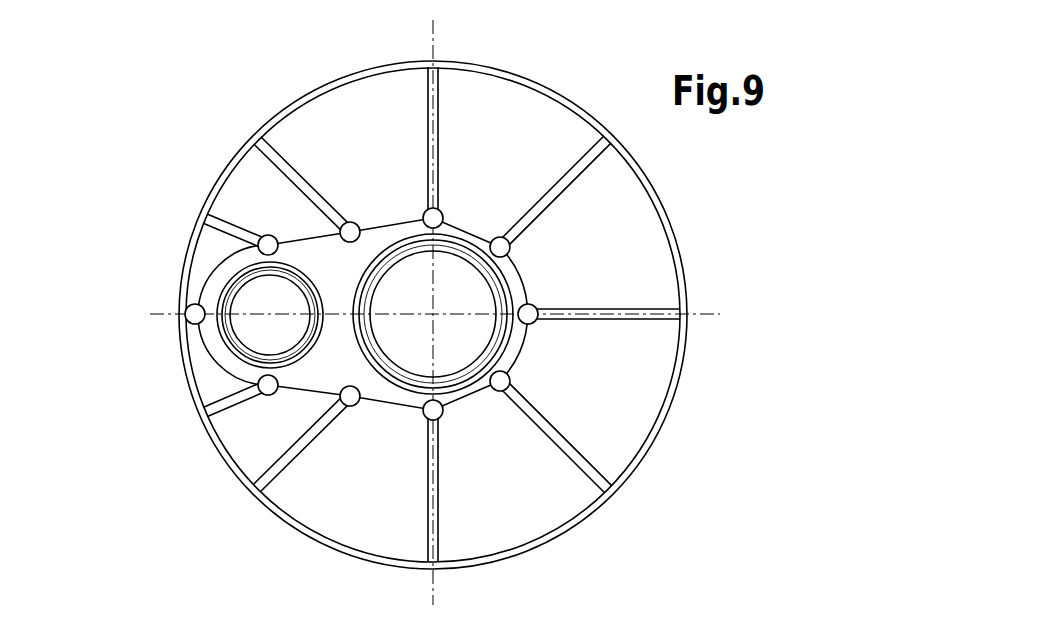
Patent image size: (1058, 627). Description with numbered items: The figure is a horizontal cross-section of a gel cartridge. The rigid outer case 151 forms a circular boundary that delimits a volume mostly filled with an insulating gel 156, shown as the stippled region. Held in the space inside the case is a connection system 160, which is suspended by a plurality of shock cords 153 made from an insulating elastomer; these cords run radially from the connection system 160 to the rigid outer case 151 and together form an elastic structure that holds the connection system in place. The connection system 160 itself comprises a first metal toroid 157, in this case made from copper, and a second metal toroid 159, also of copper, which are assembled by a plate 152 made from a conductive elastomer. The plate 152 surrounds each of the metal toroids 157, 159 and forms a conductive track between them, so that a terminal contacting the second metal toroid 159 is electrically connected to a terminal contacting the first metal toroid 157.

The rigid outer case 151 is at (657, 198).
The plate 152 is at (307, 253).
The shock cords 153 is at (628, 320).
The insulating gel 156 is at (647, 267).
The first metal toroid 157 is at (231, 276).
The second metal toroid 159 is at (460, 247).
The connection system 160 is at (220, 352).